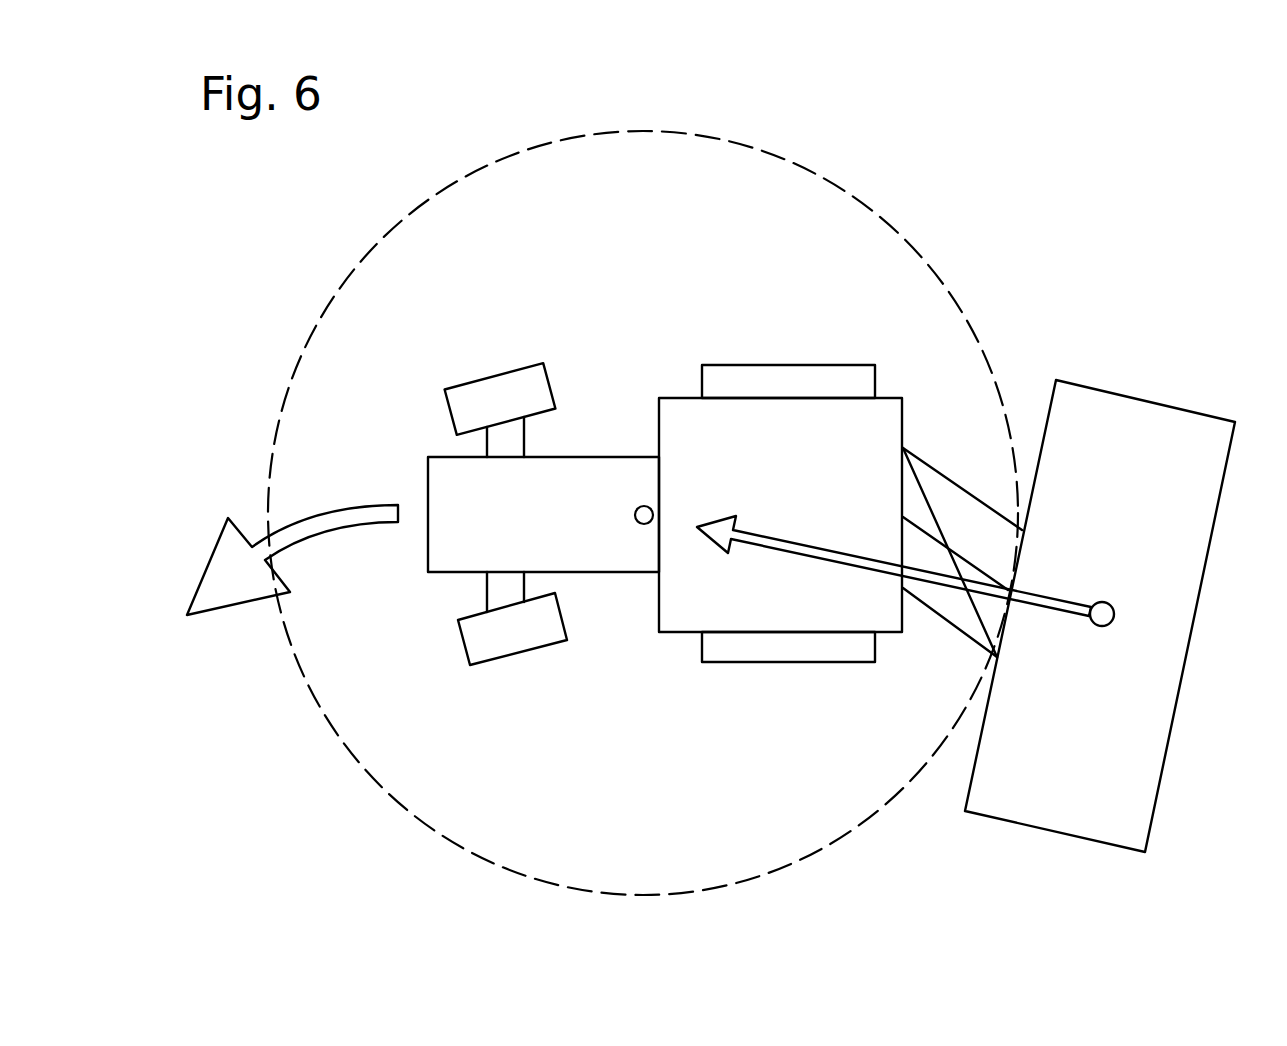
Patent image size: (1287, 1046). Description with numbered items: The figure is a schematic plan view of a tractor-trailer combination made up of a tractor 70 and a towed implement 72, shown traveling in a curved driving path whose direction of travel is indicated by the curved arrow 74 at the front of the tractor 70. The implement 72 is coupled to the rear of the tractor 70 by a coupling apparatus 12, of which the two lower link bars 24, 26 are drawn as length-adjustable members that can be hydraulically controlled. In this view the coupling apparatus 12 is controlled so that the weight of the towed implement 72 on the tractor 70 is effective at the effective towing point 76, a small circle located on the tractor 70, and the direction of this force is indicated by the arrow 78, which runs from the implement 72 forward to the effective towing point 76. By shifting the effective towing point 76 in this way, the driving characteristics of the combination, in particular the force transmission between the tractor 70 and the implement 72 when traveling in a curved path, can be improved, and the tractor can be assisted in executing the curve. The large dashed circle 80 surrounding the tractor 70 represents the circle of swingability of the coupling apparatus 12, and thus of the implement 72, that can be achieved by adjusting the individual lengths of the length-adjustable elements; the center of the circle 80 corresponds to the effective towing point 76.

The coupling apparatus 12 is at (973, 453).
The lower link bar 24 is at (950, 628).
The lower link bar 26 is at (928, 467).
The tractor 70 is at (592, 457).
The implement 72 is at (1143, 397).
The arrow 74 is at (268, 535).
The effective towing point 76 is at (633, 514).
The arrow 78 is at (805, 543).
The circle 80 is at (877, 812).